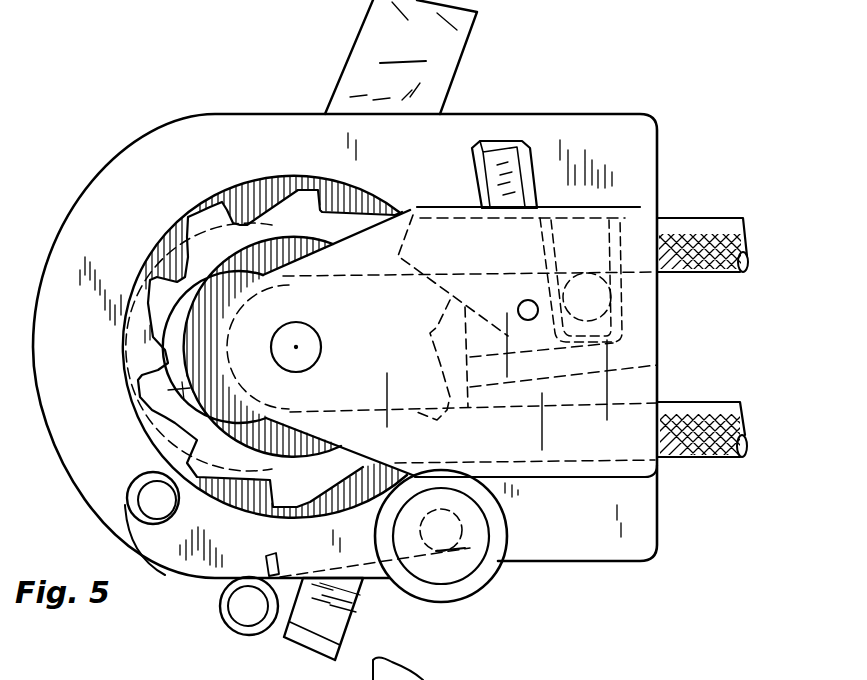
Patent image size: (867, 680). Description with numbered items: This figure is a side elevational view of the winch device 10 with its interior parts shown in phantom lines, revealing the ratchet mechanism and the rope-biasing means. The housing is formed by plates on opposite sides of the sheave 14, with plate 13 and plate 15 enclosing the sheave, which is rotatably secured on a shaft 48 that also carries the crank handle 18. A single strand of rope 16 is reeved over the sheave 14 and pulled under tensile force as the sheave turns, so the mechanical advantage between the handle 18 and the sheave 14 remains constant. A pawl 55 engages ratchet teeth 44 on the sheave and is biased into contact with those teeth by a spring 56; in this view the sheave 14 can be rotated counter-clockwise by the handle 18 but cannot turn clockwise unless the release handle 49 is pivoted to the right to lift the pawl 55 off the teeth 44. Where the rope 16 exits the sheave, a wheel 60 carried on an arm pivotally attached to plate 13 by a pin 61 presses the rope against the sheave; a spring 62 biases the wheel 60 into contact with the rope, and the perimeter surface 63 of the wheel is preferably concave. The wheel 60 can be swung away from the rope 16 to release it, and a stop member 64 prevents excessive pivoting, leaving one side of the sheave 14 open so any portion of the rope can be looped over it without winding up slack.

The winch device 10 is at (633, 575).
The plate 13 is at (652, 122).
The sheave 14 is at (187, 220).
The plate 15 is at (640, 308).
The rope 16 is at (722, 218).
The crank handle 18 is at (401, 57).
The ratchet teeth 44 is at (225, 188).
The shaft 48 is at (308, 348).
The handle 49 is at (523, 143).
The pawl 55 is at (435, 232).
The spring 56 is at (630, 210).
The wheel 60 is at (460, 585).
The pin 61 is at (140, 485).
The spring 62 is at (222, 624).
The surface 63 is at (507, 525).
The stop member 64 is at (300, 648).